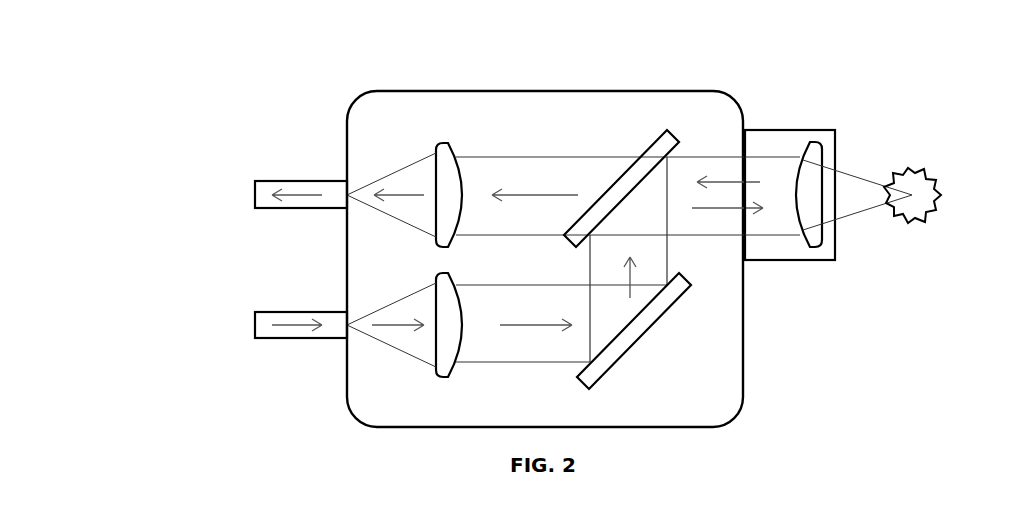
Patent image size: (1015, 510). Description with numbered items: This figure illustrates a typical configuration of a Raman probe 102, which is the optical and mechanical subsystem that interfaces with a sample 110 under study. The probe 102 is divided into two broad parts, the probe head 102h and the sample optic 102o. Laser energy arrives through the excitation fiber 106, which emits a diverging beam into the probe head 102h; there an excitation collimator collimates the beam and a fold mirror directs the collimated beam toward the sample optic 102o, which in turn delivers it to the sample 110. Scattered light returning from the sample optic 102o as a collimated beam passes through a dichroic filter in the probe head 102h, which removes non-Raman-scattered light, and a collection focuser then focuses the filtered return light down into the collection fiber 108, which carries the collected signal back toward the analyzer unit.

The probe 102 is at (147, 66).
The probe head 102h is at (745, 75).
The sample optic 102o is at (800, 130).
The excitation fiber 106 is at (290, 308).
The collection fiber 108 is at (295, 212).
The sample 110 is at (937, 182).